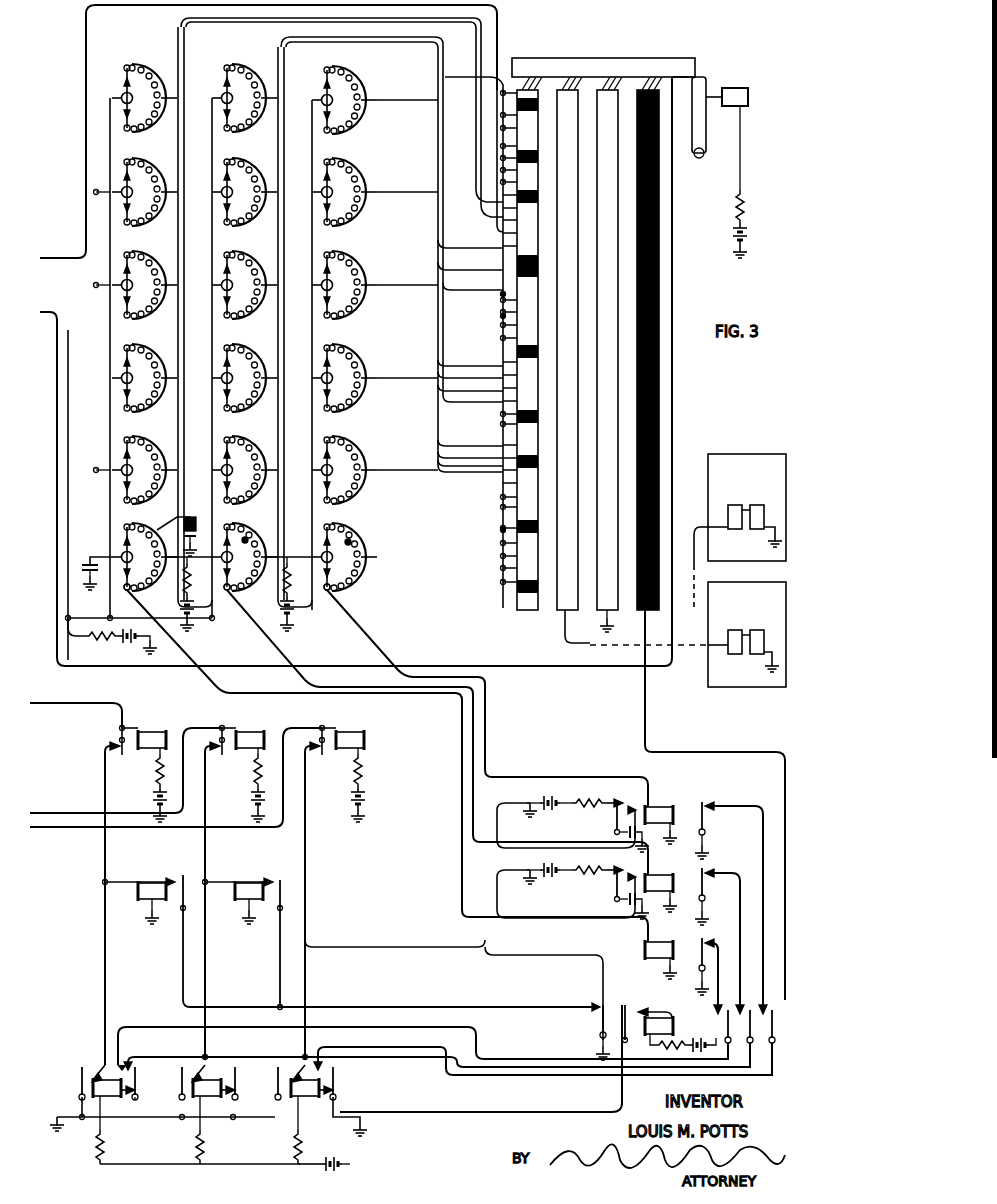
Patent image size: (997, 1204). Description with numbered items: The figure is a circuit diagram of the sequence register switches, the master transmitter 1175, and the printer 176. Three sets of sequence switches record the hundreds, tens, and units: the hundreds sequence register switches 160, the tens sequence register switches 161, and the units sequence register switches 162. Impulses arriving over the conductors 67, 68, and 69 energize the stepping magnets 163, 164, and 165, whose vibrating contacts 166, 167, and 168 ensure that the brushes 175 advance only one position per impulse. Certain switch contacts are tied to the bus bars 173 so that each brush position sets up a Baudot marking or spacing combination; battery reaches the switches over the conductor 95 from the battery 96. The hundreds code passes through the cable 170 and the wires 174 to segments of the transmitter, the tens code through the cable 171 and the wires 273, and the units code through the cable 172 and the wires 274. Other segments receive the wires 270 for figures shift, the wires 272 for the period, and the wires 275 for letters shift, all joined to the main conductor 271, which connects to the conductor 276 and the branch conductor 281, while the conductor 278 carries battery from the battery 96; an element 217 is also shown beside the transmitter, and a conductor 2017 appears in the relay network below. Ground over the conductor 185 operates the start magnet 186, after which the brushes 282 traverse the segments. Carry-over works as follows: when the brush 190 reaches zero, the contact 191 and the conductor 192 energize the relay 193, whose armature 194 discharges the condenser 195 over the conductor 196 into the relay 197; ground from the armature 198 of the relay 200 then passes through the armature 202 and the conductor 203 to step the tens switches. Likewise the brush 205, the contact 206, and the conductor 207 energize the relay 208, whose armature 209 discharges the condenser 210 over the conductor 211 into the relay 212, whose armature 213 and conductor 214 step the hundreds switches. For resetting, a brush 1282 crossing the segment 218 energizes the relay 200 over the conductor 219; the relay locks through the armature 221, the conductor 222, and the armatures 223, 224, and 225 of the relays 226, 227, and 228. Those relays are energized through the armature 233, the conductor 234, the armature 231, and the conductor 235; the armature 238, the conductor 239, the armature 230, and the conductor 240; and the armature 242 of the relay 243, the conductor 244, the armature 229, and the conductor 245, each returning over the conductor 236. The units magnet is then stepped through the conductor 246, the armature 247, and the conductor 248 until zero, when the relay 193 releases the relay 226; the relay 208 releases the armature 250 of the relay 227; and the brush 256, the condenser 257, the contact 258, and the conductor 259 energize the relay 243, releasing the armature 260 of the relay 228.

The hundreds sequence register switches 160 is at (100, 80).
The tens sequence register switches 161 is at (210, 84).
The units sequence register switches 162 is at (372, 88).
The stepping magnet 163 is at (160, 730).
The stepping magnet 164 is at (258, 730).
The stepping magnet 165 is at (360, 730).
The vibrating contact 166 is at (118, 740).
The vibrating contact 167 is at (225, 752).
The vibrating contact 168 is at (325, 752).
The cable 170 is at (482, 30).
The cable 171 is at (484, 58).
The cable 172 is at (438, 330).
The bus bars 173 is at (160, 60).
The wires 174 is at (168, 165).
The brushes 175 is at (97, 105).
The printer 176 is at (748, 687).
The conductor 185 is at (60, 345).
The start magnet 186 is at (742, 88).
The brush 190 is at (348, 542).
The contact 191 is at (333, 592).
The conductor 192 is at (370, 640).
The relay 193 is at (660, 812).
The armature 194 is at (612, 810).
The condenser 195 is at (614, 834).
The conductor 196 is at (415, 943).
The relay 197 is at (268, 866).
The armature 198 is at (600, 1022).
The relay 200 is at (650, 1012).
The armature 202 is at (290, 880).
The conductor 203 is at (205, 840).
The brush 205 is at (245, 540).
The contact 206 is at (230, 588).
The conductor 207 is at (270, 638).
The relay 208 is at (660, 878).
The armature 209 is at (612, 880).
The condenser 210 is at (614, 900).
The conductor 211 is at (505, 946).
The relay 212 is at (145, 903).
The armature 213 is at (183, 872).
The conductor 214 is at (104, 775).
The roller 217 is at (700, 72).
The segment 218 is at (655, 612).
The conductor 219 is at (722, 752).
The armature 221 is at (620, 1012).
The conductor 222 is at (540, 1112).
The armature 223 is at (340, 1080).
The armature 224 is at (236, 1098).
The armature 225 is at (138, 1090).
The relay 226 is at (310, 1098).
The relay 227 is at (210, 1096).
The relay 228 is at (108, 1096).
The armature 229 is at (735, 1022).
The armature 230 is at (757, 1034).
The armature 231 is at (776, 1042).
The armature 233 is at (705, 820).
The conductor 234 is at (765, 855).
The conductor 235 is at (496, 1076).
The conductor 236 is at (225, 1164).
The armature 238 is at (706, 872).
The conductor 239 is at (742, 915).
The conductor 240 is at (542, 1058).
The armature 242 is at (702, 942).
The relay 243 is at (648, 956).
The conductor 244 is at (720, 965).
The conductor 245 is at (174, 1026).
The conductor 246 is at (306, 840).
The armature 247 is at (280, 1057).
The conductor 248 is at (140, 1120).
The armature 250 is at (182, 1057).
The brush 256 is at (123, 530).
The condenser 257 is at (86, 560).
The contact 258 is at (127, 590).
The conductor 259 is at (180, 646).
The armature 260 is at (78, 1073).
The wires 270 is at (503, 128).
The main conductor 271 is at (503, 294).
The wires 272 is at (503, 316).
The wires 273 is at (268, 170).
The wires 274 is at (403, 103).
The wires 275 is at (503, 528).
The conductor 276 is at (555, 38).
The conductor 278 is at (69, 390).
The branch conductor 281 is at (461, 80).
The brushes 282 is at (565, 77).
The master transmitter 1175 is at (620, 50).
The brushes 1282 is at (645, 77).
The conductor 2017 is at (478, 1007).
The conductor 67 is at (68, 700).
The conductor 68 is at (68, 810).
The conductor 69 is at (75, 830).
The conductor 95 is at (220, 620).
The battery 96 is at (118, 645).